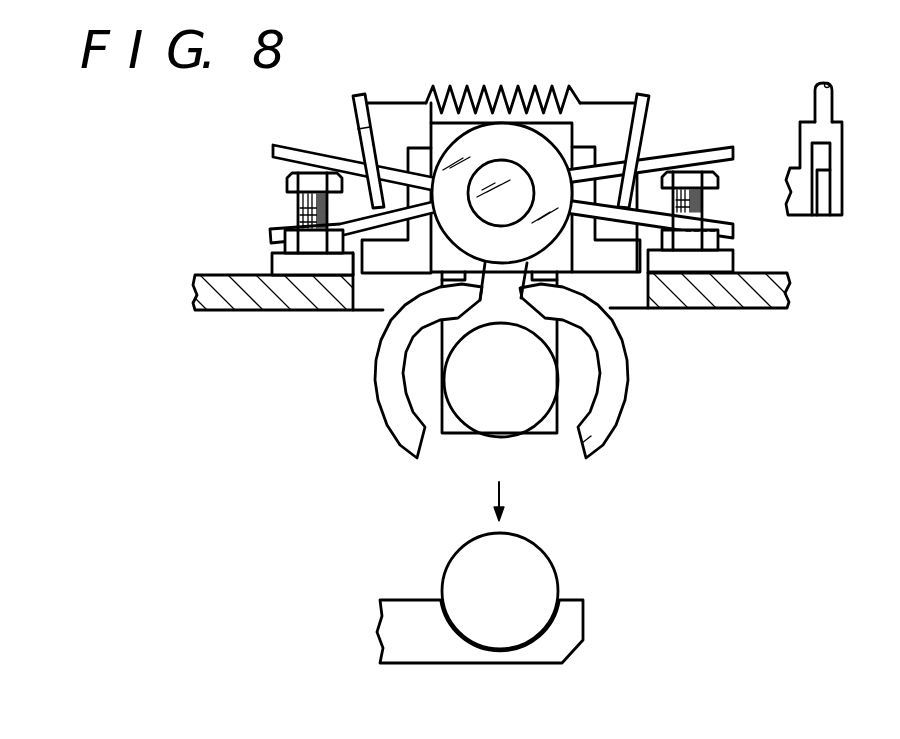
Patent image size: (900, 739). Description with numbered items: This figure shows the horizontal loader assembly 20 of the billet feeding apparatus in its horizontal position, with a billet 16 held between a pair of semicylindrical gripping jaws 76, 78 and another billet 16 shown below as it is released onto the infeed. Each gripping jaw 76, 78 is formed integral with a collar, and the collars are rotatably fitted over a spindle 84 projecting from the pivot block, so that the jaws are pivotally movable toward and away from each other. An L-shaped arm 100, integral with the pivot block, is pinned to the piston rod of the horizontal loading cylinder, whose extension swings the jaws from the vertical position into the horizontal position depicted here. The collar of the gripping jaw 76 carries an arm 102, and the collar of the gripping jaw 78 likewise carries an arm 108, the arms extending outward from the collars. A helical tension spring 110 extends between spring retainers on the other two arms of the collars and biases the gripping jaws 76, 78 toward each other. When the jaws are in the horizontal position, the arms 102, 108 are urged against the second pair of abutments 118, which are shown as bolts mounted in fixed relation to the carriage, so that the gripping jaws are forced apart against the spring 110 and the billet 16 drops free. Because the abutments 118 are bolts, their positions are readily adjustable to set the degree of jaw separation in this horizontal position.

The billet 16 is at (497, 428).
The horizontal loader assembly 20 is at (678, 107).
The gripping jaw 76 is at (620, 402).
The gripping jaw 78 is at (397, 412).
The spindle 84 is at (514, 187).
The L-shaped arm 100 is at (792, 217).
The arm 102 is at (731, 148).
The arm 108 is at (289, 146).
The helical tension spring 110 is at (500, 92).
The second pair of abutments 118 is at (305, 199).